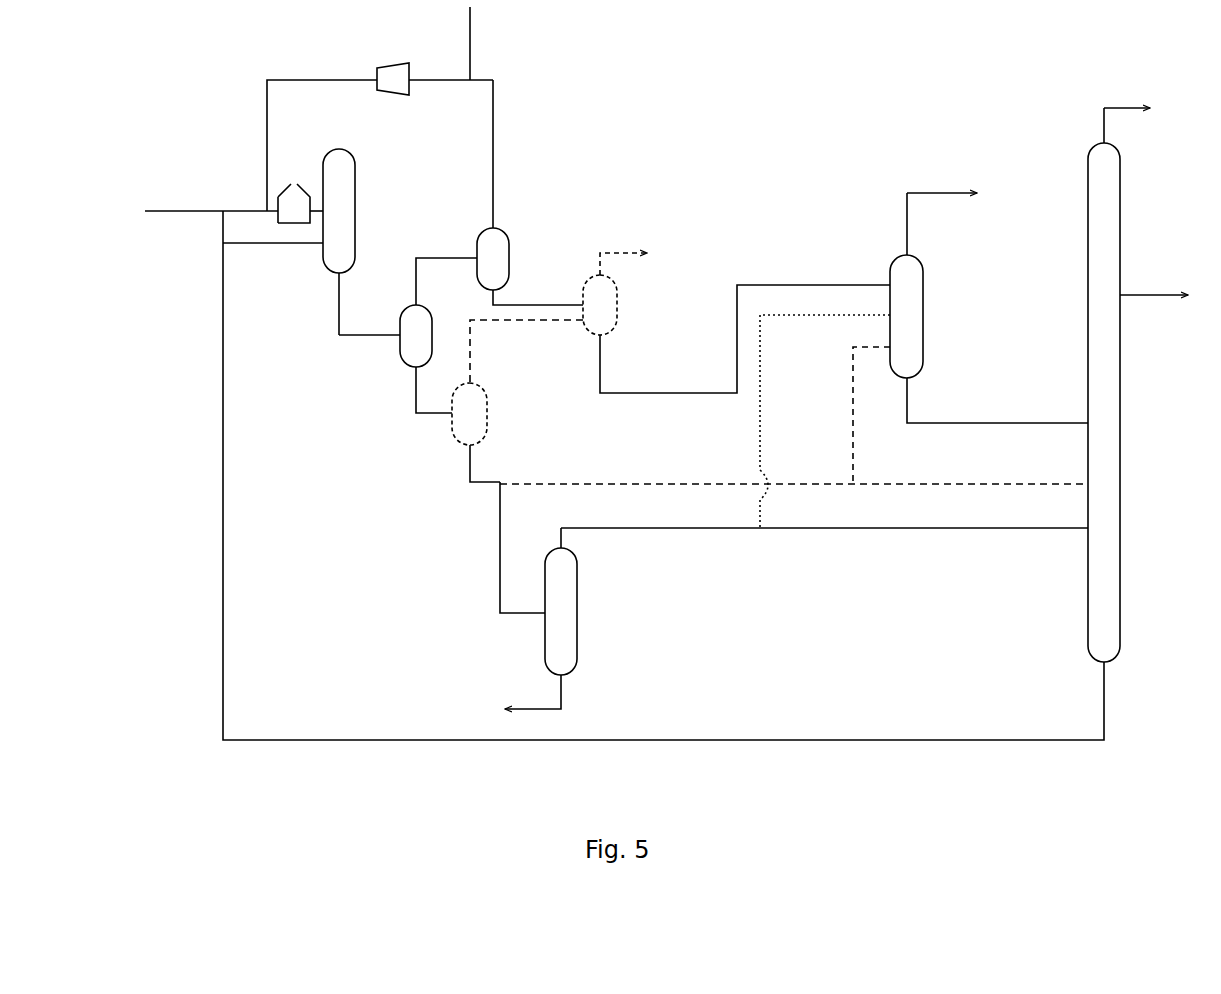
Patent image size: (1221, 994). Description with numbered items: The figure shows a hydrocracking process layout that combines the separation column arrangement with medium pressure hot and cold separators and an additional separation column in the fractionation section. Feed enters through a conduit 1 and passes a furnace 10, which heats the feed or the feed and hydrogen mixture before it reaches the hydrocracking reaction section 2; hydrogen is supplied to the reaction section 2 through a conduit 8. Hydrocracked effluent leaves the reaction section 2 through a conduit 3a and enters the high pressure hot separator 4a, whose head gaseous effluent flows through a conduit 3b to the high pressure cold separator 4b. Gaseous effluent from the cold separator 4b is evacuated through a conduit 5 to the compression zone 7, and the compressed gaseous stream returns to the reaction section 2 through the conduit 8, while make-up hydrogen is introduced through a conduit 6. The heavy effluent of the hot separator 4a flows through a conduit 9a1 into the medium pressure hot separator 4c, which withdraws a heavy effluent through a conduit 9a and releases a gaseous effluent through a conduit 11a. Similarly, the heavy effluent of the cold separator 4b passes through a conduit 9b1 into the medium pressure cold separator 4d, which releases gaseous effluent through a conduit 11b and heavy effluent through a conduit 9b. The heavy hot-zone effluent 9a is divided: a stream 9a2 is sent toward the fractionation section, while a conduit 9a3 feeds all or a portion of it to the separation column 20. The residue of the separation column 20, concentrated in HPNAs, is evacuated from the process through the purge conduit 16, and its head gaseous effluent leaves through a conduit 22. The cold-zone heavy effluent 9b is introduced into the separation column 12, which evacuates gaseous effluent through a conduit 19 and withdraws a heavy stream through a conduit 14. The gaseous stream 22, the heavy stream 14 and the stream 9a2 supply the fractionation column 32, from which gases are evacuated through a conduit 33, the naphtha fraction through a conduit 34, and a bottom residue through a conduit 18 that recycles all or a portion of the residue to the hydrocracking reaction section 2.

The conduit for introducing feed 1 is at (211, 199).
The hydrocracking reaction section 2 is at (339, 242).
The conduit for withdrawing hydrocracked effluent 3a is at (369, 327).
The conduit for evacuating gaseous effluent 3b is at (446, 270).
The high pressure hot separator 4a is at (416, 336).
The high pressure cold separator 4b is at (493, 259).
The medium pressure hot separator 4c is at (469, 414).
The medium pressure cold separator 4d is at (600, 305).
The conduit for evacuation of gaseous effluent 5 is at (503, 154).
The conduit for introducing hydrogen 6 is at (460, 43).
The compression zone 7 is at (435, 79).
The conduit for introducing compressed gaseous stream 8 is at (314, 137).
The conduit for withdrawing heavy effluent 9a is at (469, 463).
The conduit for introducing heavy effluent 9a1 is at (416, 390).
The stream obtained from stream 9a 9a2 is at (794, 475).
The conduit for introducing heavy effluent into separation column 9a3 is at (504, 547).
The conduit for withdrawing heavy effluent 9b is at (745, 323).
The conduit for introducing heavy effluent 9b1 is at (538, 290).
The furnace 10 is at (300, 203).
The conduit for gaseous effluent 11a is at (526, 351).
The conduit for gaseous effluent 11b is at (623, 248).
The separation column 12 is at (841, 360).
The conduit for withdrawing heavy effluent 14 is at (997, 400).
The purge conduit 16 is at (533, 692).
The conduit for withdrawing residue 18 is at (663, 475).
The conduit for evacuating gaseous effluent 19 is at (942, 176).
The separation column 20 is at (561, 601).
The conduit for evacuating gaseous effluent 22 is at (824, 538).
The fractionation column 32 is at (1104, 385).
The conduit for evacuating gases 33 is at (1127, 98).
The conduit for evacuation of naphtha fraction 34 is at (1154, 282).